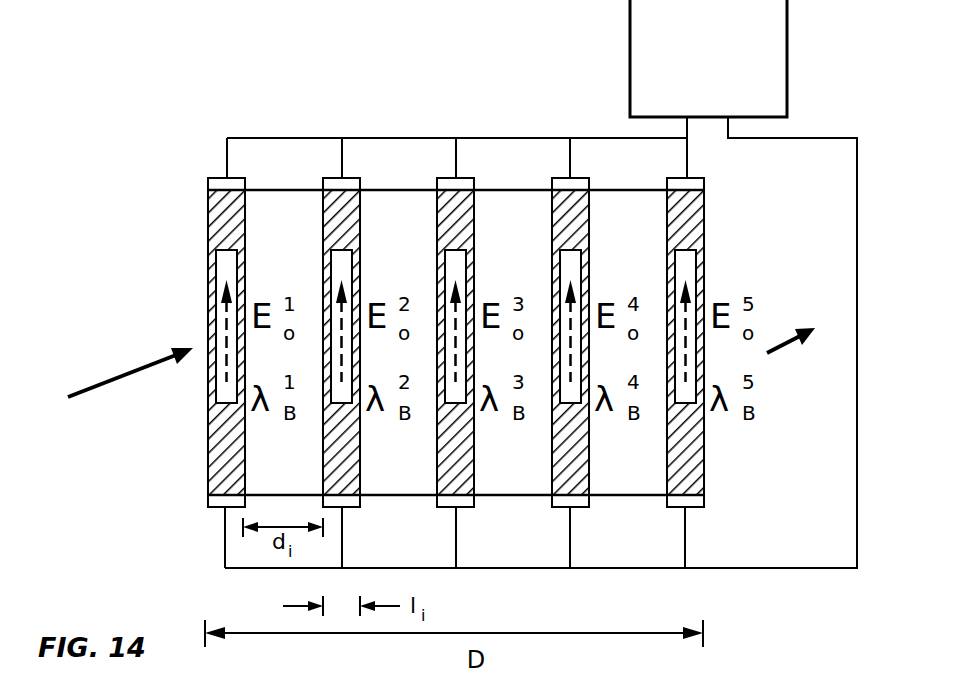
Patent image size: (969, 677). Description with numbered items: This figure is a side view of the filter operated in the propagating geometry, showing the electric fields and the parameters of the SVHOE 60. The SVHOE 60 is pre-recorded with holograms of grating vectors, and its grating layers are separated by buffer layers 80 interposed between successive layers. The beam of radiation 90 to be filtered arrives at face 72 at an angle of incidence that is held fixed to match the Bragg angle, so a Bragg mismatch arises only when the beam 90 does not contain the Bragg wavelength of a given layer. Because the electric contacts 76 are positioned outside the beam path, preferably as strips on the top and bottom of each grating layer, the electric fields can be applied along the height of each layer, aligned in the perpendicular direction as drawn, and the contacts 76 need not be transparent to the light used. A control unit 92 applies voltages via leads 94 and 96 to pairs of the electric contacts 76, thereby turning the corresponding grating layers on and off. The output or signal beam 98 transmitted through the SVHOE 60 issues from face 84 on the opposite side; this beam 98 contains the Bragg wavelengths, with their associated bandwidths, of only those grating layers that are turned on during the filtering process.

The SVHOE 60 is at (424, 375).
The face 72 is at (208, 236).
The electric contacts 76 is at (208, 182).
The buffer layers 80 is at (496, 488).
The face 84 is at (705, 222).
The beam of radiation 90 is at (100, 385).
The control unit 92 is at (695, 103).
The lead 94 is at (818, 138).
The lead 96 is at (411, 138).
The output or signal beam 98 is at (785, 356).